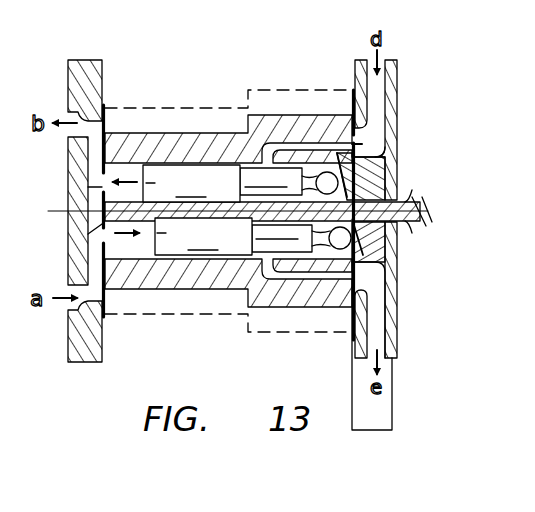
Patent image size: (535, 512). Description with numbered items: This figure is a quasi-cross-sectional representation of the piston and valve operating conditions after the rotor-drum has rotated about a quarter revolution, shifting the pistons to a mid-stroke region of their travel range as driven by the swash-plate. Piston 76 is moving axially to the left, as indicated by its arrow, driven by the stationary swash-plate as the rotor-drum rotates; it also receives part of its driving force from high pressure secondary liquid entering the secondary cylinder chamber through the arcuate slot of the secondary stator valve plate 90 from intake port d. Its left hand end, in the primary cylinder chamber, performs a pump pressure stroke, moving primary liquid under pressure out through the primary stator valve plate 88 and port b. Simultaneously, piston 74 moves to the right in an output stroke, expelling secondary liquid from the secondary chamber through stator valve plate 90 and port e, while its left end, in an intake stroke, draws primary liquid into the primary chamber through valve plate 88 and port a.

The primary stator valve plate 88 is at (104, 105).
The secondary stator valve plate 90 is at (353, 93).
The piston 76 is at (240, 183).
The piston 74 is at (253, 236).